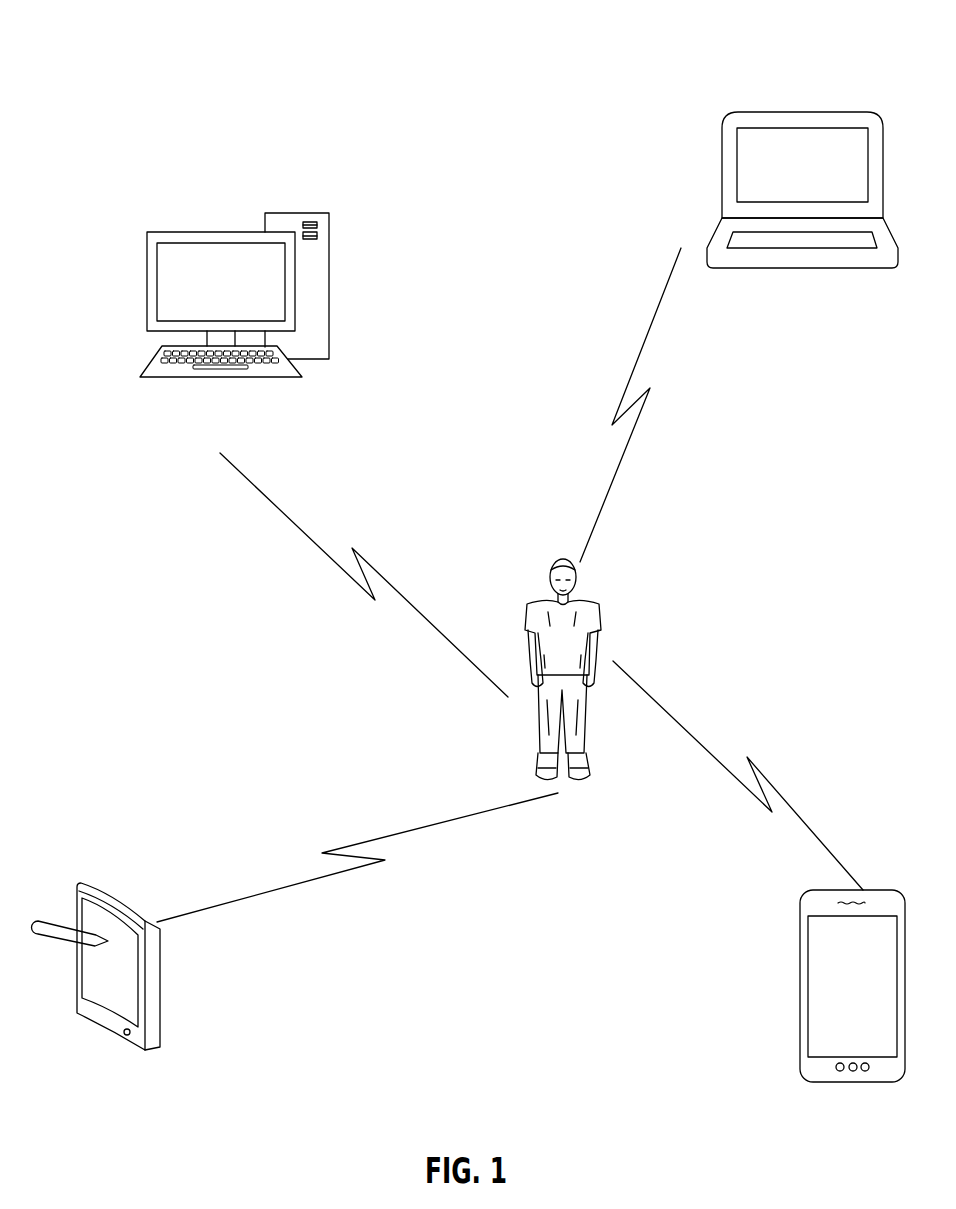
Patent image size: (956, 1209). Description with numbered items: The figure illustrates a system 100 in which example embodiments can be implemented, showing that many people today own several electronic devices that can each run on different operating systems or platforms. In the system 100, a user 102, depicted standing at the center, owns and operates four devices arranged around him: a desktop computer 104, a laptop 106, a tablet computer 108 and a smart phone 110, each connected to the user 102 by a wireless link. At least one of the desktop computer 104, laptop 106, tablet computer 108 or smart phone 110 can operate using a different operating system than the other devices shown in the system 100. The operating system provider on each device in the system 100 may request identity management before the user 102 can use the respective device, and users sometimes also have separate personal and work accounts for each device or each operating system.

The system 100 is at (158, 48).
The user 102 is at (602, 635).
The desktop computer 104 is at (330, 272).
The laptop 106 is at (807, 112).
The tablet computer 108 is at (123, 898).
The smart phone 110 is at (800, 1000).